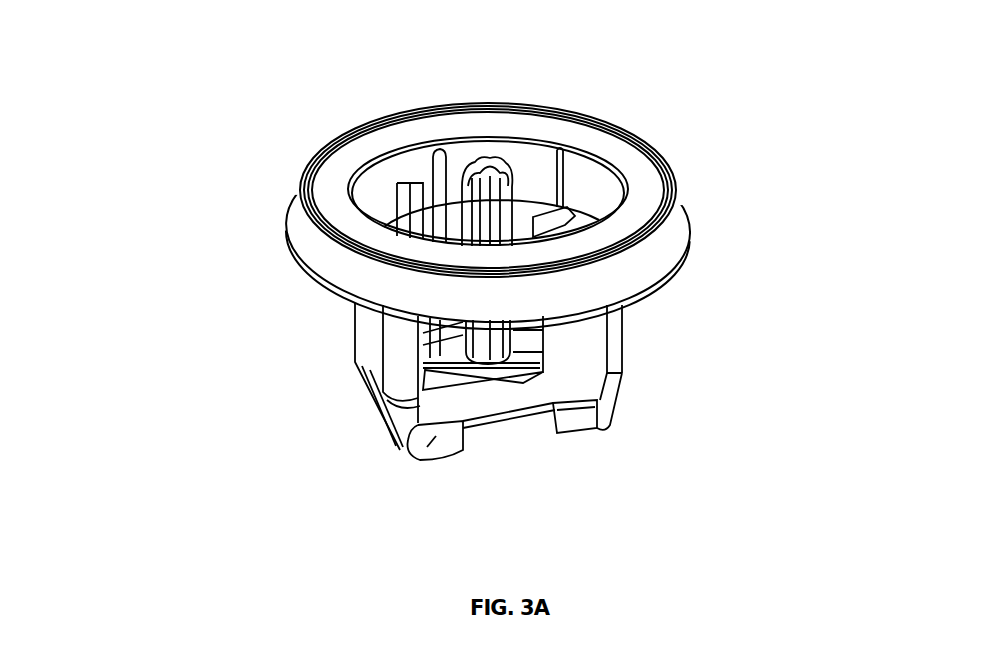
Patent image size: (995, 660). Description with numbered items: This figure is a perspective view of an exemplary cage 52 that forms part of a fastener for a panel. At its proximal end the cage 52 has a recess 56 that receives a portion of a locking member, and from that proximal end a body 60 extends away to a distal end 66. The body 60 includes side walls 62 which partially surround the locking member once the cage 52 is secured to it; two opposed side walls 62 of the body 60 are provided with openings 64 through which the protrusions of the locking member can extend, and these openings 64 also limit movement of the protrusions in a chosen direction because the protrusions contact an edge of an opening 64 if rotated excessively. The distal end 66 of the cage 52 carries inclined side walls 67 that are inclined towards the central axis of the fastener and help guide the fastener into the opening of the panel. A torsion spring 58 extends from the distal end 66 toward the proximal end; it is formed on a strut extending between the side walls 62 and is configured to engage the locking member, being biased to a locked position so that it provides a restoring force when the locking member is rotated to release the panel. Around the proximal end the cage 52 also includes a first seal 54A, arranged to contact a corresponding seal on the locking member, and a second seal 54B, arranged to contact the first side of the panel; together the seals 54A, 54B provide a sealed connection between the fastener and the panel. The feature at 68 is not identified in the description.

The cage 52 is at (160, 108).
The first seal 54A is at (630, 128).
The second seal 54B is at (690, 240).
The recess 56 is at (400, 207).
The torsion spring 58 is at (493, 160).
The body 60 is at (323, 359).
The side walls 62 is at (583, 376).
The openings 64 is at (533, 368).
The distal end 66 is at (617, 433).
The inclined side walls 67 is at (415, 458).
The opening 68 is at (483, 462).